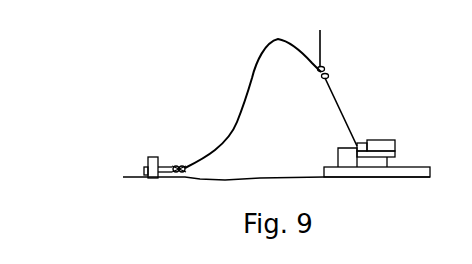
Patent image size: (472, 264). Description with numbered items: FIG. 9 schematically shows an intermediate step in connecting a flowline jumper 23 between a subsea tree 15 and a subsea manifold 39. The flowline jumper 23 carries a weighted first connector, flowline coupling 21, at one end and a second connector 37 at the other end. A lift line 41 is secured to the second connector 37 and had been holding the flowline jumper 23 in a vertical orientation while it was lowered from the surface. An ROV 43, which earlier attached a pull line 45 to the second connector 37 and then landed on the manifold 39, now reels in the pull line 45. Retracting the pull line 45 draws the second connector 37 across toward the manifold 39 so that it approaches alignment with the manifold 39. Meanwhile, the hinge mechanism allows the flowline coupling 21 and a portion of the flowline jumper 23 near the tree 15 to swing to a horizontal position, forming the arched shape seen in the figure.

The tree 15 is at (148, 162).
The flowline coupling 21 is at (177, 166).
The flowline jumper 23 is at (238, 120).
The second connector 37 is at (328, 69).
The subsea manifold 39 is at (411, 170).
The lift line 41 is at (320, 32).
The ROV 43 is at (381, 143).
The pull line 45 is at (340, 112).